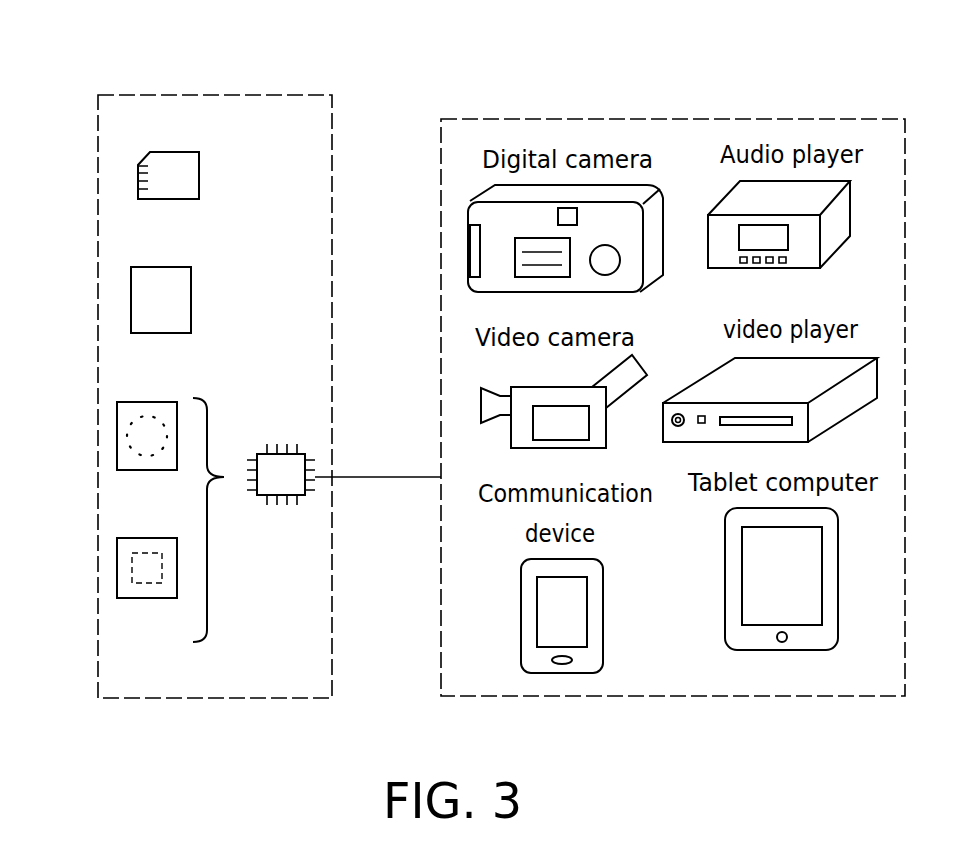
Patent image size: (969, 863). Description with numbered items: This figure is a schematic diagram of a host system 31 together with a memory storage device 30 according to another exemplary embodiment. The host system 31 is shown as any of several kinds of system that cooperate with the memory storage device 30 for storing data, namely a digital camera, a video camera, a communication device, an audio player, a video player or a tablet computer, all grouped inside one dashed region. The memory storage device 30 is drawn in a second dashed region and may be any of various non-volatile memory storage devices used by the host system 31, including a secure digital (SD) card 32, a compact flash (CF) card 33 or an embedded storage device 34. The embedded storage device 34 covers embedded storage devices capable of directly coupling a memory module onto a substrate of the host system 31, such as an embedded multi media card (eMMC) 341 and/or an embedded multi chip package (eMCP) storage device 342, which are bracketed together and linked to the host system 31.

The memory storage device 30 is at (203, 95).
The host system 31 is at (600, 118).
The secure digital (SD) card 32 is at (138, 181).
The compact flash (CF) card 33 is at (131, 302).
The embedded storage device 34 is at (280, 444).
The embedded multi media card (eMMC) 341 is at (117, 437).
The embedded multi chip package (eMCP) storage device 342 is at (117, 570).